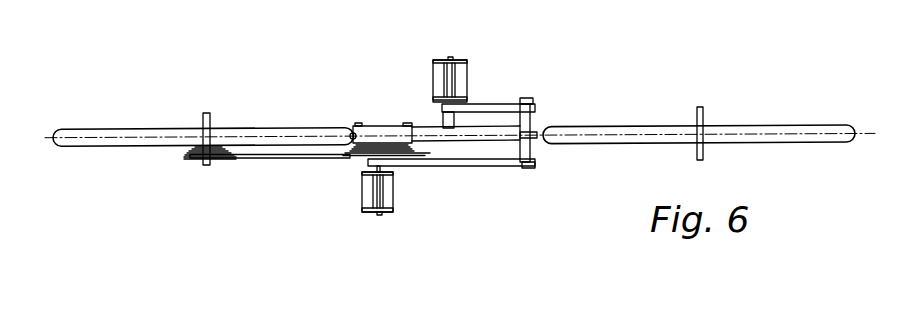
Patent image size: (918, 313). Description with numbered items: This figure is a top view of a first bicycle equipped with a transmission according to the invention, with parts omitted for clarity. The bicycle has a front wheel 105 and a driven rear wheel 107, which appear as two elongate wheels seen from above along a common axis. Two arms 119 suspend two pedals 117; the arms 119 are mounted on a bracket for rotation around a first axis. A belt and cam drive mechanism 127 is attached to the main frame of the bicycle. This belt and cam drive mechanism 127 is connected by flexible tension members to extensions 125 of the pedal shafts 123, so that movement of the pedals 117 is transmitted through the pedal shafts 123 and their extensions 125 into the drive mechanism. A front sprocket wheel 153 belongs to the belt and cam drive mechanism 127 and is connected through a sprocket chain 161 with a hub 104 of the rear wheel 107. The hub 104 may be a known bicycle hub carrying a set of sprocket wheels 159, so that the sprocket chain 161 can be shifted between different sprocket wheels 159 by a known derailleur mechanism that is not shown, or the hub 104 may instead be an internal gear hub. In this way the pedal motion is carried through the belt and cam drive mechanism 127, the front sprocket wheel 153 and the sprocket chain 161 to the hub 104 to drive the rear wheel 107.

The hub 104 is at (192, 170).
The front wheel 105 is at (655, 130).
The driven rear wheel 107 is at (136, 133).
The pedals 117 is at (440, 77).
The arms 119 is at (505, 104).
The pedal shafts 123 is at (453, 66).
The extensions 125 is at (442, 116).
The belt and cam drive mechanism 127 is at (358, 166).
The front sprocket wheel 153 is at (345, 158).
The sprocket wheels 159 is at (184, 155).
The sprocket chain 161 is at (254, 158).